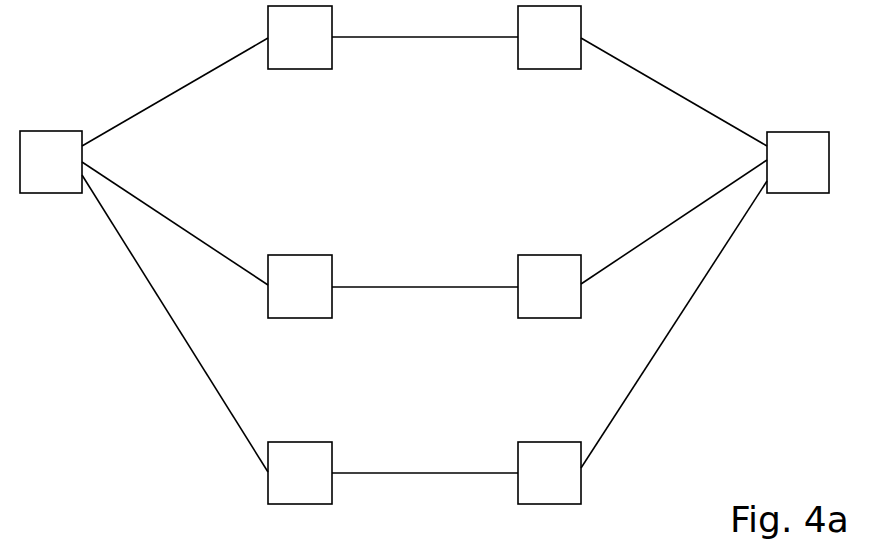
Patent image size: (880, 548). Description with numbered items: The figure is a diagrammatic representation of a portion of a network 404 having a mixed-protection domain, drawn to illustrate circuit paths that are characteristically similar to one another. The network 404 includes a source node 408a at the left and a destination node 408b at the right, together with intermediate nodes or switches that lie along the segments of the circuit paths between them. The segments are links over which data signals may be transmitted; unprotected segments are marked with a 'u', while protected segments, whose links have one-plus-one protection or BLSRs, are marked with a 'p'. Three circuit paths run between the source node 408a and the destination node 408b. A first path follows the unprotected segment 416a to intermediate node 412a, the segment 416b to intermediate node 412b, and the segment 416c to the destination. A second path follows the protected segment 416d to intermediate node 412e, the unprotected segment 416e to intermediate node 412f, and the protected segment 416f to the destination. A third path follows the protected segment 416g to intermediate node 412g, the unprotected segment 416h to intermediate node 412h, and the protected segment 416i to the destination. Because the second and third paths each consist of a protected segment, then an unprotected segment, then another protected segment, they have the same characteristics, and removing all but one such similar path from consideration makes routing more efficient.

The network 404 is at (80, 27).
The source node 408a is at (35, 131).
The destination node 408b is at (813, 132).
The intermediate node 412a is at (301, 69).
The intermediate node 412b is at (548, 69).
The intermediate node 412e is at (300, 255).
The intermediate node 412f is at (548, 255).
The intermediate node 412g is at (300, 442).
The intermediate node 412h is at (548, 442).
The unprotected segment 416a is at (222, 64).
The segment 416b is at (378, 38).
The segment 416c is at (708, 112).
The protected segment 416d is at (118, 186).
The unprotected segment 416e is at (487, 288).
The protected segment 416f is at (711, 197).
The protected segment 416g is at (210, 380).
The unprotected segment 416h is at (487, 474).
The protected segment 416i is at (714, 264).